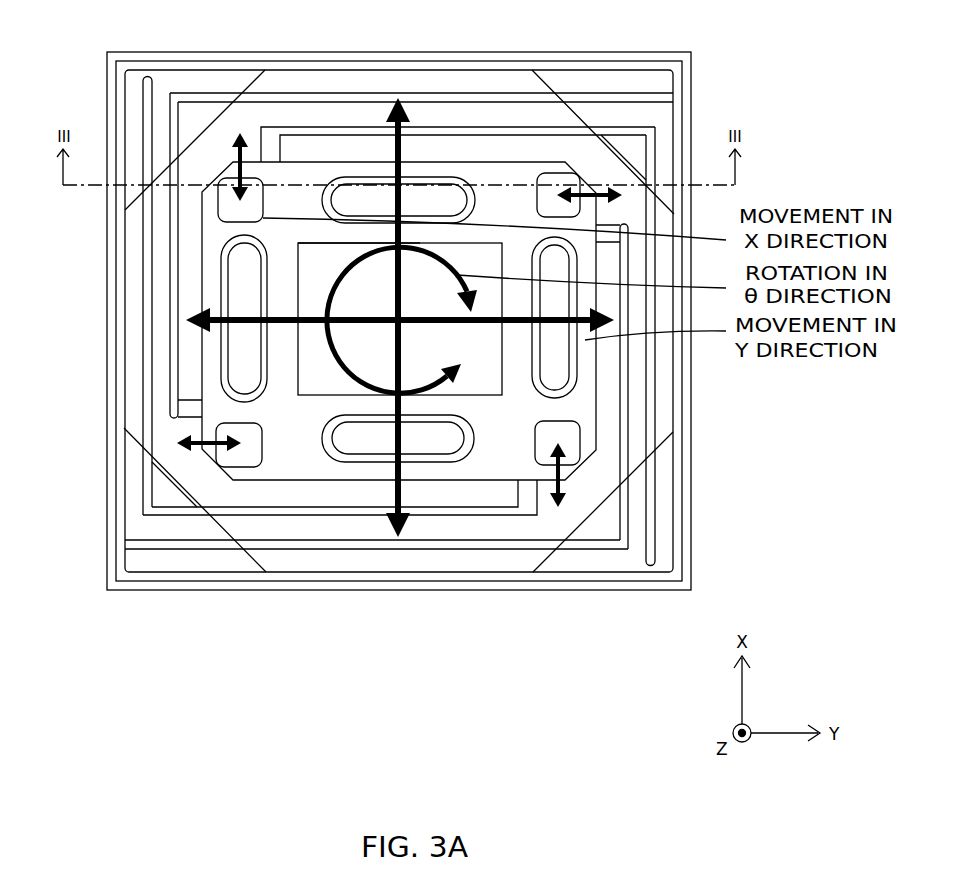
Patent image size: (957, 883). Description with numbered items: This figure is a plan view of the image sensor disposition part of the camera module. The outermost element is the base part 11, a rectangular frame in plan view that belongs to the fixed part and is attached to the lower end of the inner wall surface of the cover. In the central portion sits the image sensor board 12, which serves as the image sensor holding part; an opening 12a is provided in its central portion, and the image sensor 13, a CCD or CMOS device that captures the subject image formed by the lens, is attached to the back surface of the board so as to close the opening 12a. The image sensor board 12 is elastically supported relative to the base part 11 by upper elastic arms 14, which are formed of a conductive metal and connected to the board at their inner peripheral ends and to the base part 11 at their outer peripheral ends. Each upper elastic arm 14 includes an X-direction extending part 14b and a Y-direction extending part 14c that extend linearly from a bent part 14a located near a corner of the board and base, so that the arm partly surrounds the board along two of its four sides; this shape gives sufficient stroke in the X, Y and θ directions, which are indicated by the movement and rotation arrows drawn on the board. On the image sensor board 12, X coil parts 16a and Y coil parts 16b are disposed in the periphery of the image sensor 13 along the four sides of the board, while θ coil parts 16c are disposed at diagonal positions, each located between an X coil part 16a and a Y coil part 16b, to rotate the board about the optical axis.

The base part 11 is at (607, 583).
The image sensor board 12 is at (457, 472).
The opening 12a is at (347, 243).
The image sensor 13 is at (482, 383).
The upper elastic arm 14 is at (489, 92).
The bent part 14a is at (176, 92).
The X-direction extending part 14b is at (178, 264).
The Y-direction extending part 14c is at (327, 92).
The X coil part 16a is at (420, 176).
The Y coil part 16b is at (224, 373).
The θ coil part 16c is at (557, 178).